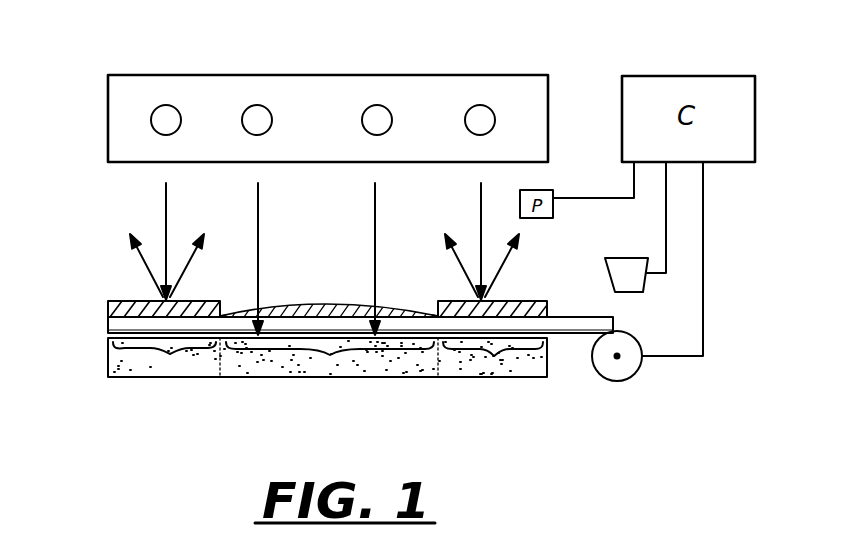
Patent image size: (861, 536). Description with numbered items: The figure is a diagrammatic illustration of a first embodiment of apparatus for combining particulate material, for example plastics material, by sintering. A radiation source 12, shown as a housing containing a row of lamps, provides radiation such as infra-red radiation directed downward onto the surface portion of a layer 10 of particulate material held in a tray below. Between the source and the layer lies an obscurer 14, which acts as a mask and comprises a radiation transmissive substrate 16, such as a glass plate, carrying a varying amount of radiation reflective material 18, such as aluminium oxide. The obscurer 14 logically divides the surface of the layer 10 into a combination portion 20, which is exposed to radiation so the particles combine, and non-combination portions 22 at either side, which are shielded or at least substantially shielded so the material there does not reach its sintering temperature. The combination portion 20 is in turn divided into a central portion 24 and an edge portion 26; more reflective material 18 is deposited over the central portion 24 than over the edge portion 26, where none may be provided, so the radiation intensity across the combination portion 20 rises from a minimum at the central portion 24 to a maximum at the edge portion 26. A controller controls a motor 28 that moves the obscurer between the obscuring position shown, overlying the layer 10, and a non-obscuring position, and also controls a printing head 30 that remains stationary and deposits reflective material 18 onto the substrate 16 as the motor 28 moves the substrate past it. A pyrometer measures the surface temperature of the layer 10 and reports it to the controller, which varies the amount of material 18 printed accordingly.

The layer of particulate material 10 is at (125, 372).
The radiation source 12 is at (221, 98).
The obscurer 14 is at (88, 327).
The radiation transmissive substrate 16 is at (113, 327).
The radiation reflective material 18 is at (123, 309).
The combination portion 20 is at (333, 365).
The non-combination portion 22 is at (167, 360).
The central portion 24 is at (318, 304).
The edge portion 26 is at (225, 313).
The motor 28 is at (627, 362).
The printing head 30 is at (630, 278).